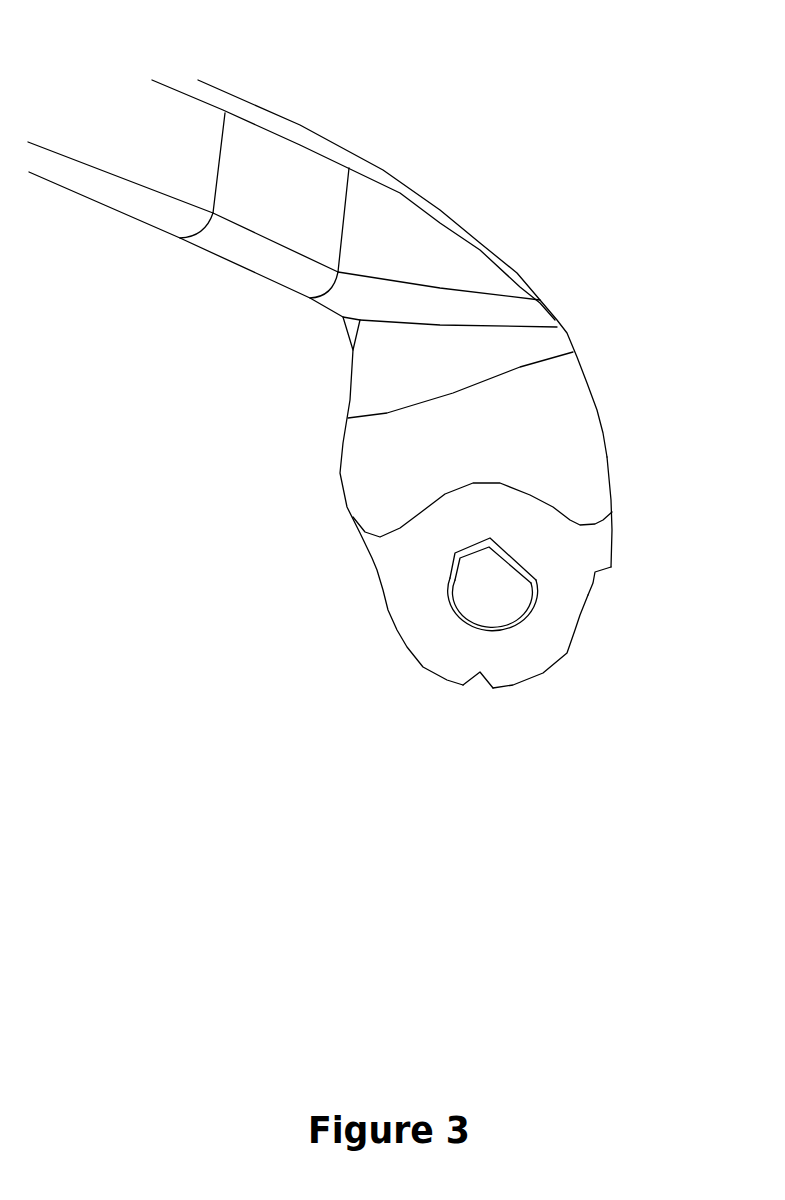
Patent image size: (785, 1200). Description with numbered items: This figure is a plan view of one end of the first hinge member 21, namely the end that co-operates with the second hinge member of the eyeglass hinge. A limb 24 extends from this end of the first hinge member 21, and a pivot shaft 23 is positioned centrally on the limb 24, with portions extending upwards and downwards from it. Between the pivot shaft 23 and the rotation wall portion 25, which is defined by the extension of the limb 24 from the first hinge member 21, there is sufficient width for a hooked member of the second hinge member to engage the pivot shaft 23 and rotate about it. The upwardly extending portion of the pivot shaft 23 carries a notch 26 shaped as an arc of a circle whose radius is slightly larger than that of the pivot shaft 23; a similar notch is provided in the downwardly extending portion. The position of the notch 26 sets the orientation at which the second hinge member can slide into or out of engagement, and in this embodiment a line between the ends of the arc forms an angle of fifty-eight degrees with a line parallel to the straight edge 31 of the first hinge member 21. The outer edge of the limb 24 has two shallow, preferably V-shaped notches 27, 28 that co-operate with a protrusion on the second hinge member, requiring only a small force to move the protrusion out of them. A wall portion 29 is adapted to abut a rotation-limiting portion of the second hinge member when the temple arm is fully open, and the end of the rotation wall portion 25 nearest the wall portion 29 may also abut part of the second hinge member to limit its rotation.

The first hinge member 21 is at (402, 163).
The pivot shaft 23 is at (460, 591).
The limb 24 is at (405, 643).
The rotation wall portion 25 is at (500, 482).
The notch 26 is at (503, 558).
The notch 27 is at (580, 600).
The notch 28 is at (458, 690).
The wall portion 29 is at (593, 575).
The straight edge 31 is at (603, 552).